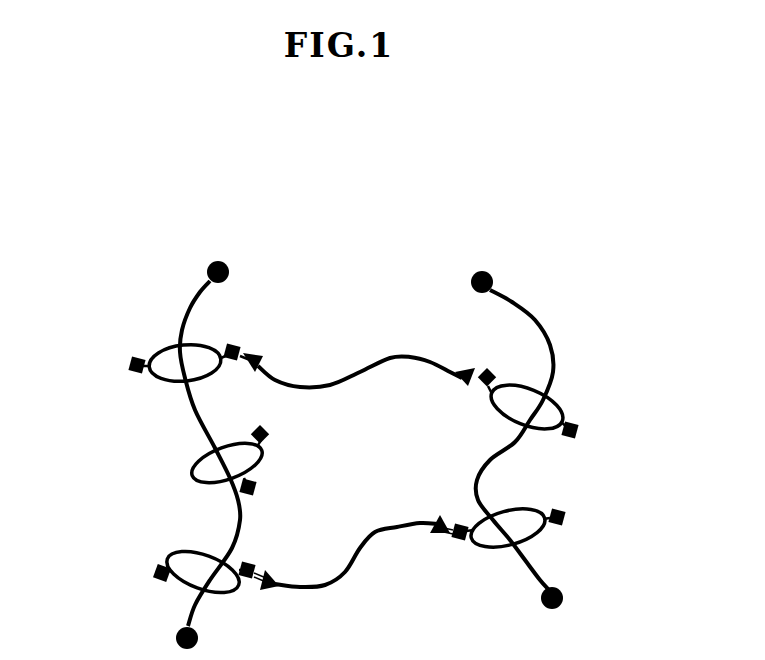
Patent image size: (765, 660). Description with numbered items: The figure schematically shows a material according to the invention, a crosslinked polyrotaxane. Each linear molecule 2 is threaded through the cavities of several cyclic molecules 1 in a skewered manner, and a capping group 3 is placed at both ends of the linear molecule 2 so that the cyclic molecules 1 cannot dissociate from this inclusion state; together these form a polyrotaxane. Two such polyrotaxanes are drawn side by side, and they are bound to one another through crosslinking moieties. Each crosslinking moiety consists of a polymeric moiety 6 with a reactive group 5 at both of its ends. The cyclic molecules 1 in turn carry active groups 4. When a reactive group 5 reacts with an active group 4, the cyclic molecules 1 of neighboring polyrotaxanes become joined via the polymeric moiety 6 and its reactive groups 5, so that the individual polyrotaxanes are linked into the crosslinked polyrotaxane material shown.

The cyclic molecule 1 is at (157, 339).
The linear molecule 2 is at (189, 297).
The capping group 3 is at (220, 252).
The active group 4 is at (233, 339).
The reactive group 5 is at (263, 349).
The polymeric moiety 6 is at (373, 347).